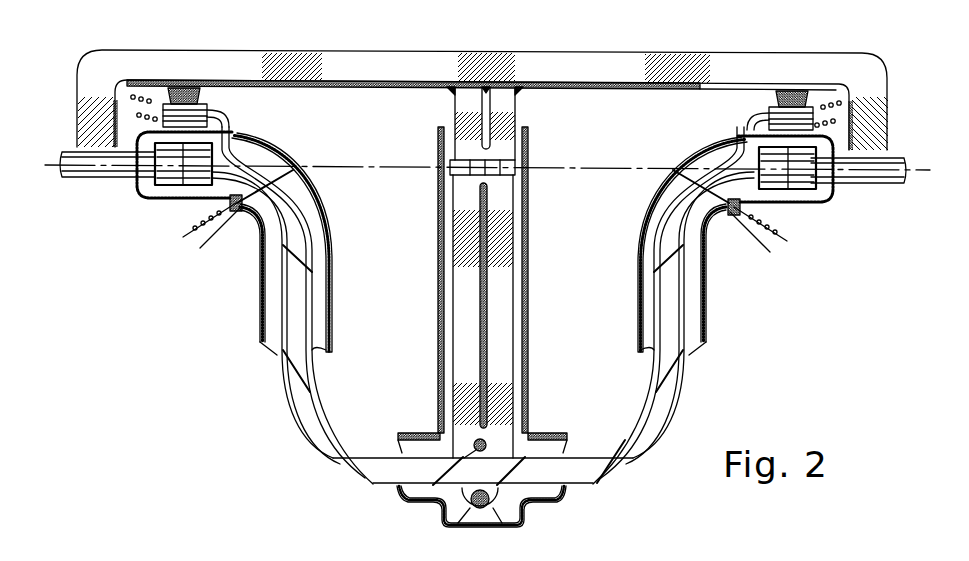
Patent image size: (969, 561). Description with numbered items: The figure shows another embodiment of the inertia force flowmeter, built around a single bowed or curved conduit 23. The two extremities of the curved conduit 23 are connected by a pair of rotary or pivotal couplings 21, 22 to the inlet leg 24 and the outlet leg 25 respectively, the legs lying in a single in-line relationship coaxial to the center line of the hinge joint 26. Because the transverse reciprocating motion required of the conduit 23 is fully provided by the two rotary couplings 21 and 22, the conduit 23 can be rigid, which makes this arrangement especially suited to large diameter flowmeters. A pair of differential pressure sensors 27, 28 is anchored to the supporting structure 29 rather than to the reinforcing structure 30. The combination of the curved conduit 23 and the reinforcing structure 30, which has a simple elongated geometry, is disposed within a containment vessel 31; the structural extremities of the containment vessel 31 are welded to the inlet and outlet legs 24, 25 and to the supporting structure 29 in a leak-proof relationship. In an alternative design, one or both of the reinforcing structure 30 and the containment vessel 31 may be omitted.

The rotary coupling 21 is at (187, 187).
The rotary coupling 22 is at (780, 175).
The curved conduit 23 is at (375, 468).
The inlet leg 24 is at (88, 178).
The outlet leg 25 is at (863, 185).
The hinge joint 26 is at (473, 160).
The differential pressure sensor 27 is at (183, 108).
The differential pressure sensor 28 is at (790, 110).
The supporting structure 29 is at (607, 84).
The reinforcing structure 30 is at (530, 302).
The containment vessel 31 is at (262, 297).